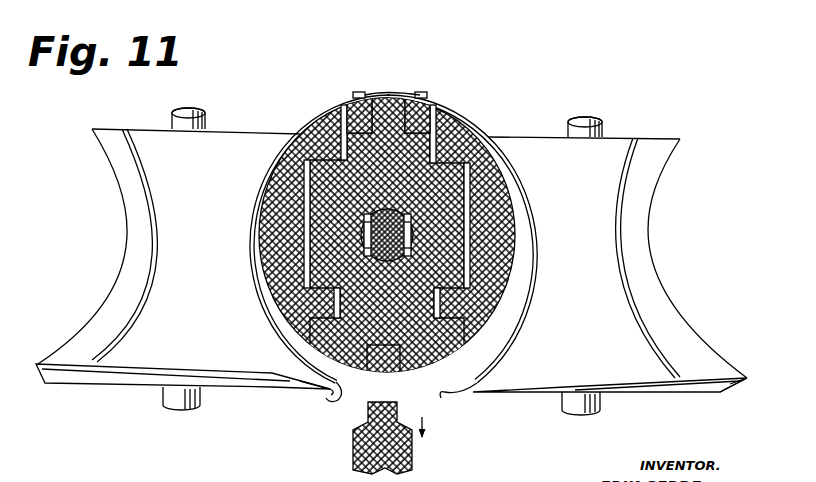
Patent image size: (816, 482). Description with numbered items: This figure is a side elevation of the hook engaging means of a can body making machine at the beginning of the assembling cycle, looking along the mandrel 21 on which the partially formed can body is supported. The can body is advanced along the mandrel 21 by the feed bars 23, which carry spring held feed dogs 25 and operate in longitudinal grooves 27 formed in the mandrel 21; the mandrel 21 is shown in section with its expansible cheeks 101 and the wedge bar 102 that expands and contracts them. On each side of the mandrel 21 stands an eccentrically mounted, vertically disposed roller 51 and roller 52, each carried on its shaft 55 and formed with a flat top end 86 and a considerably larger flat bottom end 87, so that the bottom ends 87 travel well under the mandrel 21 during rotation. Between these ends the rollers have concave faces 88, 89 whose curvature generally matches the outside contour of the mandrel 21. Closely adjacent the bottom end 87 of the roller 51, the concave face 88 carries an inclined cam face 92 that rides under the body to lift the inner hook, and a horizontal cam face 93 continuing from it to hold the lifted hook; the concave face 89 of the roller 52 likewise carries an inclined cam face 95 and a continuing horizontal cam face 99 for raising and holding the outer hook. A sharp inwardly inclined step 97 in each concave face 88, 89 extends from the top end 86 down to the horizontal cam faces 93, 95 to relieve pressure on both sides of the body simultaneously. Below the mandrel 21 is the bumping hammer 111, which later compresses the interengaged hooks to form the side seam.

The mandrel 21 is at (463, 303).
The feed bars 23 is at (354, 100).
The feed dogs 25 is at (419, 94).
The longitudinal grooves 27 is at (357, 130).
The roller 51 is at (210, 236).
The roller 52 is at (590, 259).
The shafts 55 is at (193, 120).
The top ends 86 is at (133, 127).
The bottom ends 87 is at (141, 389).
The concave face 88 is at (283, 149).
The concave face 89 is at (512, 158).
The inclined cam face 92 is at (286, 367).
The horizontal cam face 93 is at (172, 367).
The inclined cam face 95 is at (598, 377).
The step 97 is at (145, 291).
The horizontal cam face 99 is at (717, 374).
The expansible cheeks 101 is at (283, 174).
The wedge bar 102 is at (378, 248).
The bumping hammer 111 is at (374, 416).